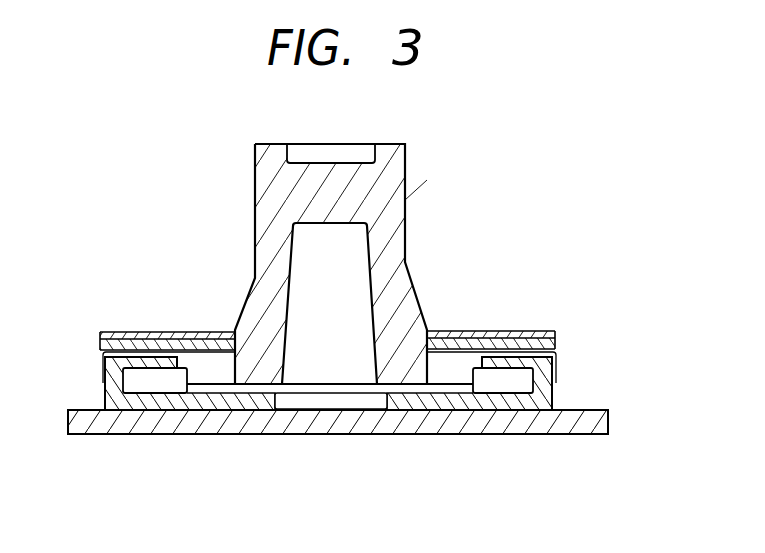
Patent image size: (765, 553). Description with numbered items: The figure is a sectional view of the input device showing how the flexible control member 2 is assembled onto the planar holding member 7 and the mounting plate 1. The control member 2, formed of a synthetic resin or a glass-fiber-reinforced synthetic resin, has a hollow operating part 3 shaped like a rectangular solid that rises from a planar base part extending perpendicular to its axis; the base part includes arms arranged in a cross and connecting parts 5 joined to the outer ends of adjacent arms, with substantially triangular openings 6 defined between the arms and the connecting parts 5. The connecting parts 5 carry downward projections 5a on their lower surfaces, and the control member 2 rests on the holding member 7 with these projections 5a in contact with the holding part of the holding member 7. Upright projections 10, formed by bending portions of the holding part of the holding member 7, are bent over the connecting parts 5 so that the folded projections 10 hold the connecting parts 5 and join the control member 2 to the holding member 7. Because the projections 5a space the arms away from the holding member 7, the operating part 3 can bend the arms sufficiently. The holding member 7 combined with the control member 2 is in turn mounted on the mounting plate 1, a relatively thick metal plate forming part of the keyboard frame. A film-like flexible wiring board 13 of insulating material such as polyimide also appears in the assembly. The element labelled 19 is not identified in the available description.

The mounting plate 1 is at (588, 418).
The control member 2 is at (406, 172).
The operating part 3 is at (434, 222).
The connecting parts 5 is at (157, 376).
The downward projections 5a is at (180, 386).
The openings 6 is at (224, 392).
The holding member 7 is at (556, 393).
The upright projections 10 is at (132, 360).
The flexible wiring board 13 is at (212, 332).
The flange 19 is at (456, 332).